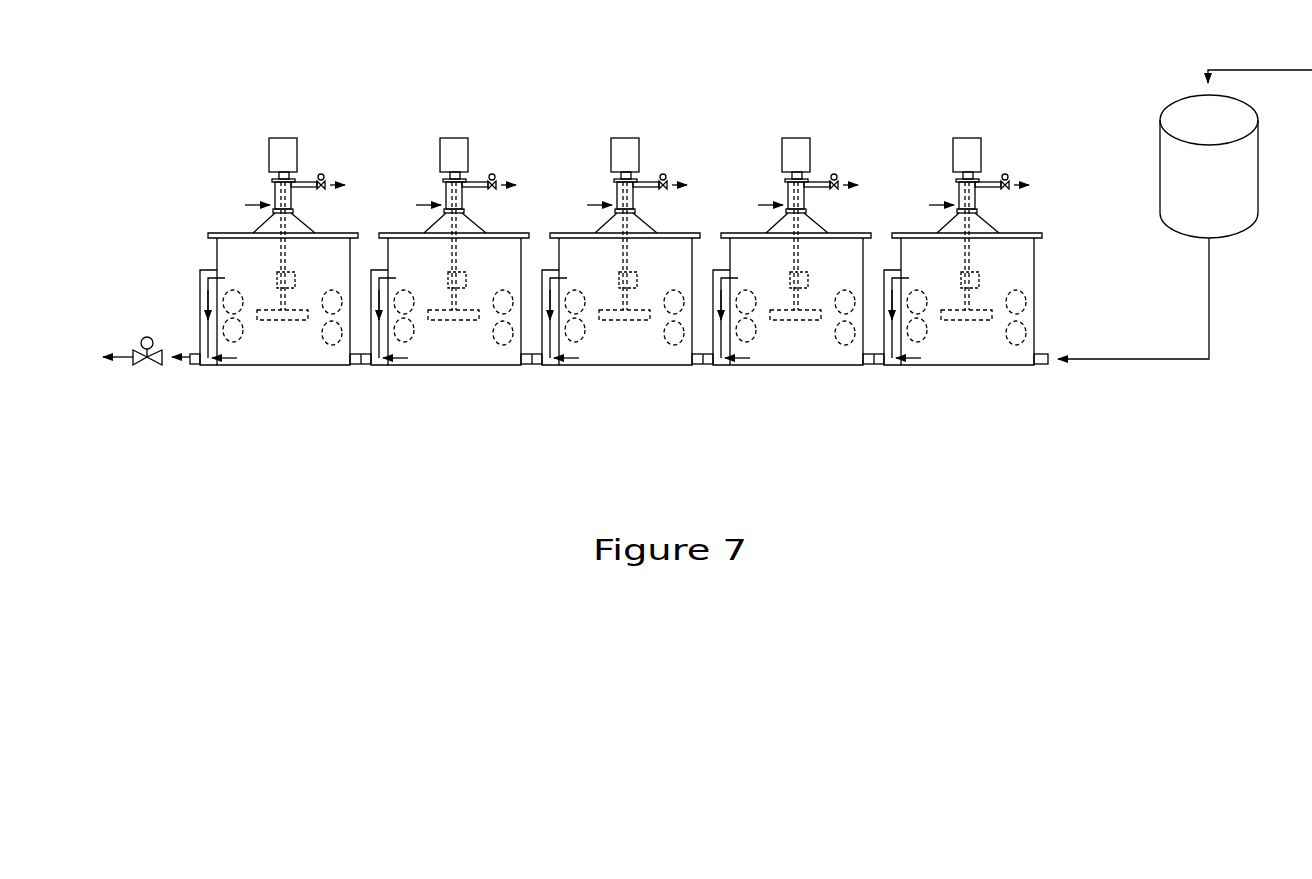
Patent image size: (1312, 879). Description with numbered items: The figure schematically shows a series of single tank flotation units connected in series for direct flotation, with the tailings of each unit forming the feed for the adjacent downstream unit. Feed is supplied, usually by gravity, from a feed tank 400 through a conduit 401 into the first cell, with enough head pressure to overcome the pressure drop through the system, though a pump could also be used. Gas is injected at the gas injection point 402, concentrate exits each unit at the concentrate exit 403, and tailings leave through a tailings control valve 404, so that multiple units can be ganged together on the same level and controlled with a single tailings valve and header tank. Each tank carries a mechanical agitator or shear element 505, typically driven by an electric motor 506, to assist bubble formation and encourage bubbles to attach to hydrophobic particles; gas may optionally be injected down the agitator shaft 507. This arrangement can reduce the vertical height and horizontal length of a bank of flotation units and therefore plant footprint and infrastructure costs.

The feed tank 400 is at (1173, 163).
The conduit 401 is at (1073, 359).
The gas injection point 402 is at (114, 359).
The concentrate exit 403 is at (358, 370).
The tailings control valve 404 is at (333, 176).
The mechanical agitator or shear element 505 is at (273, 321).
The electric motor 506 is at (268, 160).
The agitator shaft 507 is at (258, 260).